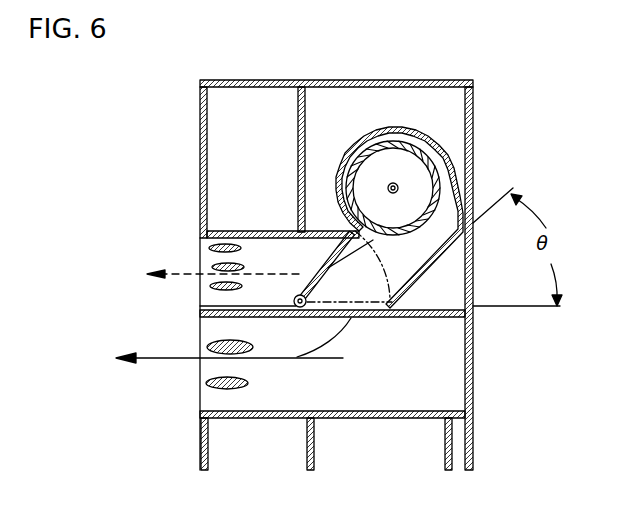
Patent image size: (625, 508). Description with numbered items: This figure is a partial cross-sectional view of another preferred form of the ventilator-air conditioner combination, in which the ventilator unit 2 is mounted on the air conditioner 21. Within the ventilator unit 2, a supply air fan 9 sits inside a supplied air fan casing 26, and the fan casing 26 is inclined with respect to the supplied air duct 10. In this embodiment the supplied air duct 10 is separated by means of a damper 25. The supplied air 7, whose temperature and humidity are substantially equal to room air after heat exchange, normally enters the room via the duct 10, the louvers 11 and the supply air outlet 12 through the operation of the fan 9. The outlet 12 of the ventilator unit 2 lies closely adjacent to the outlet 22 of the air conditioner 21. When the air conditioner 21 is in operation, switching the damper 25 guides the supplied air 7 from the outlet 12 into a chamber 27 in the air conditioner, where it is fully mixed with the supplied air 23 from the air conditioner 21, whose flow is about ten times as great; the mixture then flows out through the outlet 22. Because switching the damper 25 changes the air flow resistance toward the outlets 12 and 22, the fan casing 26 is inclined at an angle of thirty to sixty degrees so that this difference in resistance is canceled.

The ventilator unit 2 is at (253, 80).
The supplied air 7 is at (333, 262).
The supply air fan 9 is at (372, 140).
The supplied air duct 10 is at (262, 247).
The louvers 11 is at (214, 263).
The supply air outlet 12 is at (201, 271).
The air conditioner 21 is at (475, 437).
The outlet of the air conditioner 22 is at (200, 392).
The supplied air from the air conditioner 23 is at (343, 358).
The damper 25 is at (308, 263).
The supplied air fan casing 26 is at (418, 128).
The chamber 27 is at (445, 345).